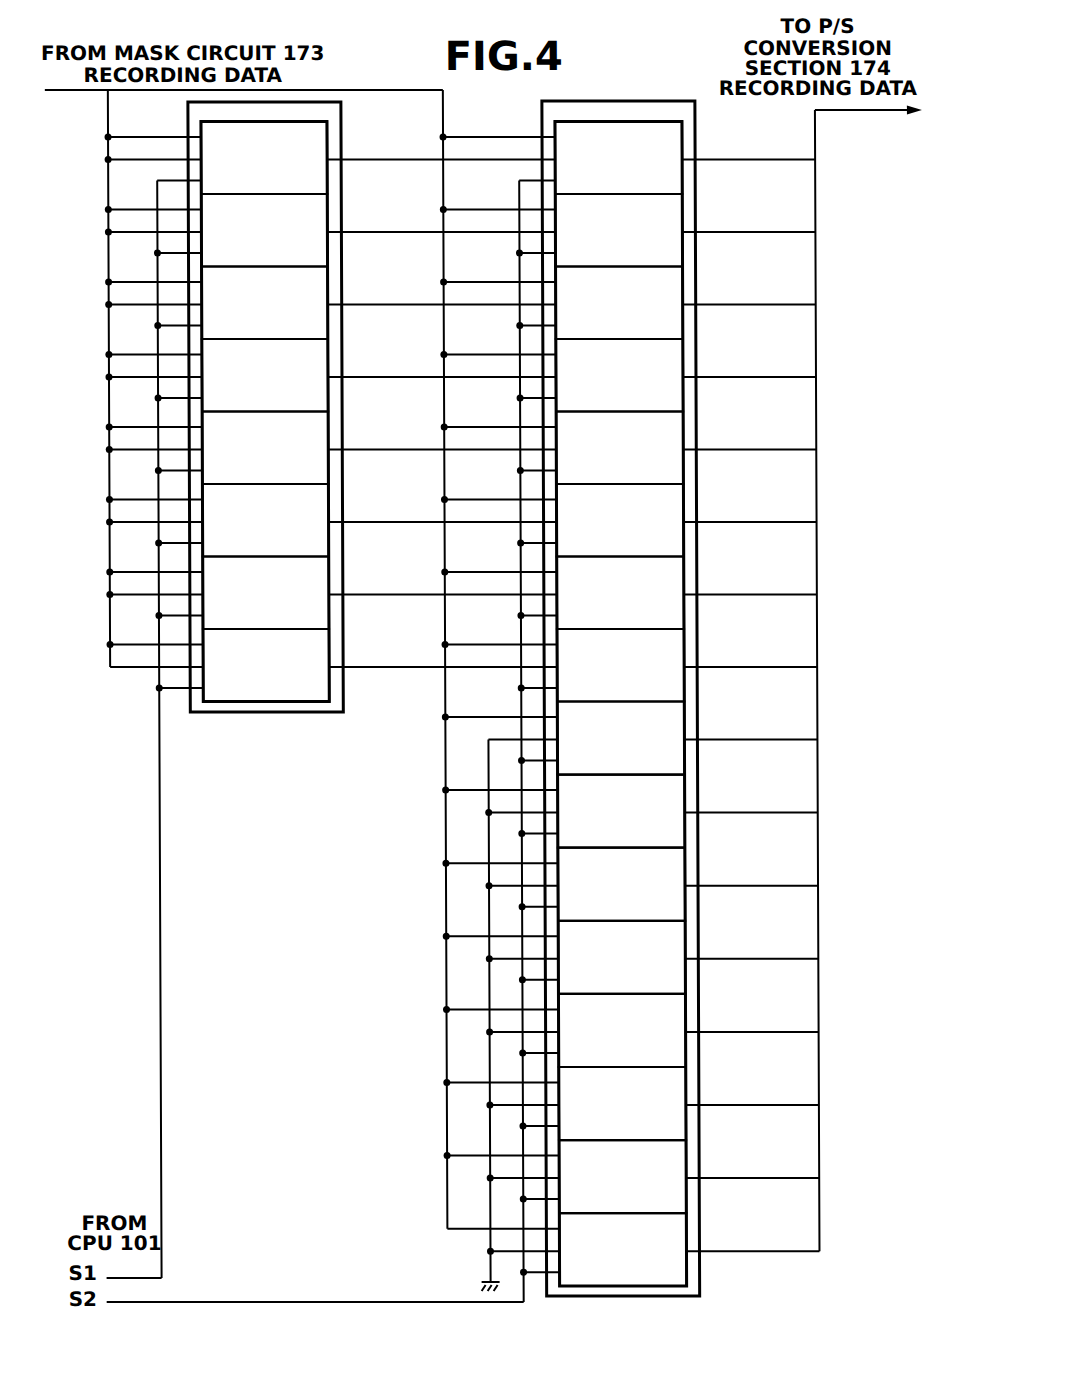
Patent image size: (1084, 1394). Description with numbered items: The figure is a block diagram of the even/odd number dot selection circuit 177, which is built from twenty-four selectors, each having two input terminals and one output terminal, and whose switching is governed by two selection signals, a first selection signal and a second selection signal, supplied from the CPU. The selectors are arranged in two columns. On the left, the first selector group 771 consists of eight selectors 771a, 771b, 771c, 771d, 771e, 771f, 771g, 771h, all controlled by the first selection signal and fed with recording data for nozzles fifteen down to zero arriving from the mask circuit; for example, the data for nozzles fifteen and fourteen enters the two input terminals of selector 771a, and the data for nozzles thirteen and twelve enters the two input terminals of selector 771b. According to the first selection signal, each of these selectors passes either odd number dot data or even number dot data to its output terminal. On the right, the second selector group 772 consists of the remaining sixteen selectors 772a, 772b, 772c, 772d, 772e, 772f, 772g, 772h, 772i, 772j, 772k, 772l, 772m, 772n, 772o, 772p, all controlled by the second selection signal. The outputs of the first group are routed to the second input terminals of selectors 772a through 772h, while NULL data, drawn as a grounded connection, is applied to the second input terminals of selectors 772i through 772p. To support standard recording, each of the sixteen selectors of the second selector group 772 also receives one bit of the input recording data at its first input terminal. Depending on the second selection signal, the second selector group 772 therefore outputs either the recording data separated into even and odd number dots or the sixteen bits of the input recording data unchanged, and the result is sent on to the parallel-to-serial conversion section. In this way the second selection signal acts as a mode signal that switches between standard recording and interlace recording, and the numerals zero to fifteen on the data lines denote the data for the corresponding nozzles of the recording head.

The even/odd number dot selection circuit 177 is at (690, 88).
The first selector group 771 is at (263, 712).
The selector 771a is at (338, 140).
The selector 771b is at (338, 212).
The selector 771c is at (338, 285).
The selector 771d is at (338, 358).
The selector 771e is at (338, 430).
The selector 771f is at (338, 502).
The selector 771g is at (338, 575).
The selector 771h is at (338, 648).
The second selector group 772 is at (698, 1265).
The selector 772a is at (696, 140).
The selector 772b is at (696, 212).
The selector 772c is at (696, 285).
The selector 772d is at (696, 358).
The selector 772e is at (696, 430).
The selector 772f is at (696, 502).
The selector 772g is at (696, 575).
The selector 772h is at (696, 648).
The selector 772i is at (696, 720).
The selector 772j is at (696, 793).
The selector 772k is at (696, 866).
The selector 772l is at (696, 939).
The selector 772m is at (696, 1012).
The selector 772n is at (696, 1085).
The selector 772o is at (696, 1158).
The selector 772p is at (696, 1231).